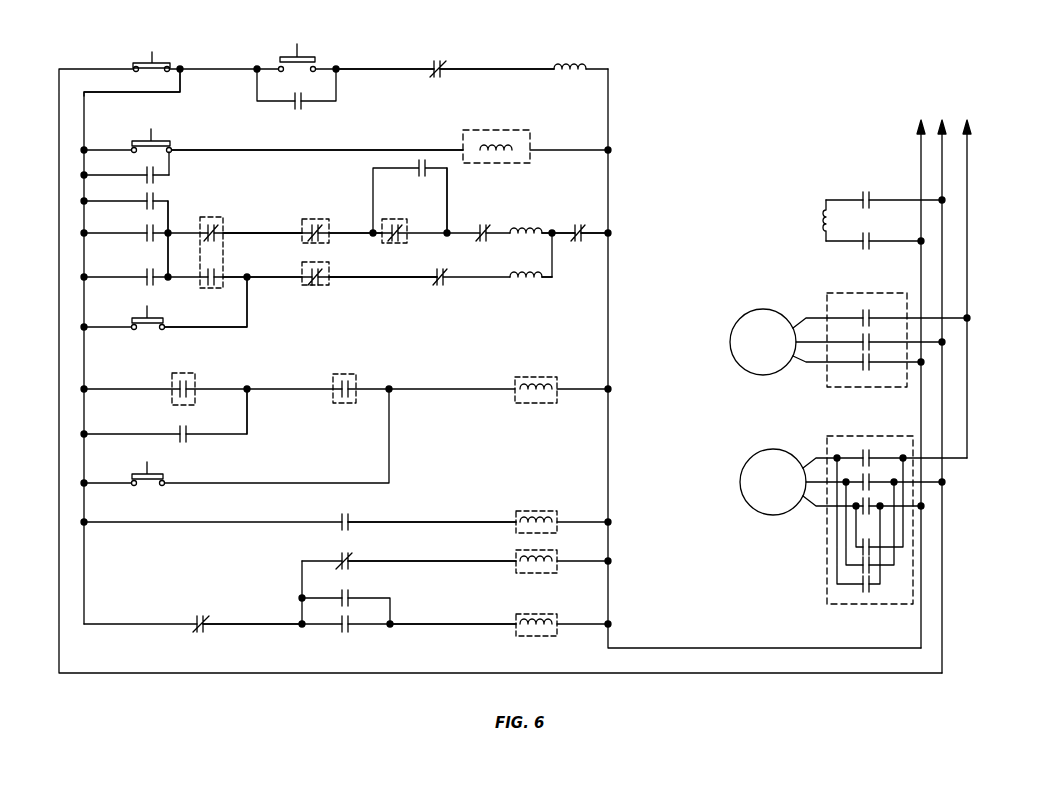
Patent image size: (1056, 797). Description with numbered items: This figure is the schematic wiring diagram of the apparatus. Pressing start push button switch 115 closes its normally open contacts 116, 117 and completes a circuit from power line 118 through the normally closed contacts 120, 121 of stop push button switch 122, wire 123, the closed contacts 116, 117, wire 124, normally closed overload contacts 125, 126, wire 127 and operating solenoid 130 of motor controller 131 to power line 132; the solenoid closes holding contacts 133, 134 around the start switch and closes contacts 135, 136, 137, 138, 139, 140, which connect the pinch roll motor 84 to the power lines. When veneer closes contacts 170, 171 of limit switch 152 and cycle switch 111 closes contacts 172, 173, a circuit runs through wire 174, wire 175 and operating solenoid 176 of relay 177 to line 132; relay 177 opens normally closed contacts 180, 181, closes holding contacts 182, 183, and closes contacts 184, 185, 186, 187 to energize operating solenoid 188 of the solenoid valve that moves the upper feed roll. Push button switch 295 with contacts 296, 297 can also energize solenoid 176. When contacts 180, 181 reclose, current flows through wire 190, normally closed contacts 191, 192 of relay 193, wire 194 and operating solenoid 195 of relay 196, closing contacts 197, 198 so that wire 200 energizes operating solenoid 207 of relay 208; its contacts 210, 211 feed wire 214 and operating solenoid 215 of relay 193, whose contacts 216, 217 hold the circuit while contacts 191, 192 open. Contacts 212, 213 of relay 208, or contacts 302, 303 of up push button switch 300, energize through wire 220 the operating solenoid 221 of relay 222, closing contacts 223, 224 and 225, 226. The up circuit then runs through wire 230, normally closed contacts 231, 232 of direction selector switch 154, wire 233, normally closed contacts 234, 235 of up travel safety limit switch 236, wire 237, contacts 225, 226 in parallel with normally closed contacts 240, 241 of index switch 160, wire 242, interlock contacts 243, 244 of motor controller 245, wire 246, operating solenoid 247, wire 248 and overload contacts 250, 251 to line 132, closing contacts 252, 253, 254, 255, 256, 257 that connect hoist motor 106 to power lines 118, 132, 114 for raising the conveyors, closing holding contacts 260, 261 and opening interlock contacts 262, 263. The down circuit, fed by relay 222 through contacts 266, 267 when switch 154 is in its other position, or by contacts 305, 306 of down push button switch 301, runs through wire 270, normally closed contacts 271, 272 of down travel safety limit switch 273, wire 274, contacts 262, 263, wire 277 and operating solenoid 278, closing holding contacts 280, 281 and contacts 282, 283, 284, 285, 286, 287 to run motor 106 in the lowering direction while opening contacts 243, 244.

The motor 84 is at (763, 309).
The hoist motor 106 is at (764, 454).
The timing switch 111 is at (185, 363).
The power line 114 is at (967, 156).
The start push button switch 115 is at (298, 45).
The normally open contact 116 is at (279, 66).
The normally open contact 117 is at (315, 66).
The power line 118 is at (59, 215).
The normally closed contact 120 is at (135, 66).
The normally closed contact 121 is at (169, 66).
The stop push button switch 122 is at (153, 52).
The wire 123 is at (200, 80).
The wire 124 is at (365, 80).
The normally closed overload contact 125 is at (433, 67).
The normally closed overload contact 126 is at (447, 62).
The wire 127 is at (509, 69).
The operating solenoid 130 is at (575, 67).
The motor controller 131 is at (827, 374).
The power line 132 is at (612, 171).
The normally open contact 133 is at (292, 106).
The normally open contact 134 is at (306, 107).
The normally open contact 135 is at (862, 316).
The normally open contact 136 is at (870, 314).
The normally open contact 137 is at (862, 340).
The normally open contact 138 is at (870, 340).
The normally open contact 139 is at (862, 368).
The normally open contact 140 is at (870, 368).
The limit switch 152 is at (342, 374).
The direction selector switch 154 is at (218, 225).
The index switch 160 is at (393, 219).
The normally open contact 170 is at (340, 384).
The normally open contact 171 is at (350, 386).
The normally open contact 172 is at (178, 386).
The normally open contact 173 is at (188, 387).
The wire 174 is at (247, 414).
The wire 175 is at (390, 415).
The operating solenoid 176 is at (534, 384).
The relay 177 is at (543, 377).
The normally closed contact 180 is at (195, 620).
The normally closed contact 181 is at (207, 618).
The normally open contact 182 is at (178, 428).
The normally open contact 183 is at (188, 432).
The normally open contact 184 is at (860, 198).
The normally open contact 185 is at (870, 196).
The normally open contact 186 is at (862, 248).
The normally open contact 187 is at (870, 250).
The operating solenoid 188 is at (822, 224).
The wire 190 is at (236, 628).
The normally closed contact 191 is at (340, 558).
The normally closed contact 192 is at (350, 558).
The relay 193 is at (545, 614).
The wire 194 is at (405, 562).
The operating solenoid 195 is at (526, 560).
The relay 196 is at (545, 556).
The normally open contact 197 is at (339, 521).
The normally open contact 198 is at (350, 520).
The wire 200 is at (405, 522).
The operating solenoid 207 is at (530, 520).
The relay 208 is at (540, 511).
The normally open contact 210 is at (338, 633).
The normally open contact 211 is at (352, 634).
The normally open contact 212 is at (144, 171).
The normally open contact 213 is at (156, 176).
The wire 214 is at (430, 630).
The operating solenoid 215 is at (530, 622).
The normally open contact 216 is at (342, 594).
The normally open contact 217 is at (350, 594).
The wire 220 is at (372, 150).
The operating solenoid 221 is at (496, 144).
The relay 222 is at (520, 130).
The normally open contact 223 is at (144, 198).
The normally open contact 224 is at (156, 200).
The normally open contact 225 is at (418, 170).
The normally open contact 226 is at (447, 180).
The wire 230 is at (169, 219).
The normally closed contact 231 is at (206, 240).
The normally closed contact 232 is at (219, 228).
The wire 233 is at (268, 233).
The normally closed contact 234 is at (302, 240).
The normally closed contact 235 is at (325, 222).
The up travel safety limit switch 236 is at (314, 219).
The wire 237 is at (322, 229).
The normally closed contact 240 is at (382, 240).
The normally closed contact 241 is at (420, 228).
The wire 242 is at (448, 198).
The interlock contact 243 is at (478, 243).
The interlock contact 244 is at (490, 230).
The motor controller 245 is at (822, 614).
The wire 246 is at (505, 237).
The operating solenoid 247 is at (532, 233).
The wire 248 is at (555, 270).
The overload contact 250 is at (574, 243).
The overload contact 251 is at (586, 228).
The normally open contact 252 is at (863, 456).
The normally open contact 253 is at (871, 458).
The normally open contact 254 is at (863, 480).
The normally open contact 255 is at (871, 480).
The normally open contact 256 is at (863, 504).
The normally open contact 257 is at (871, 504).
The normally open contact 260 is at (144, 231).
The normally open contact 261 is at (150, 240).
The interlock contact 262 is at (435, 285).
The interlock contact 263 is at (446, 270).
The contact 266 is at (207, 286).
The contact 267 is at (217, 274).
The wire 270 is at (247, 313).
The normally closed contact 271 is at (302, 284).
The normally closed contact 272 is at (324, 270).
The down travel safety limit switch 273 is at (316, 285).
The wire 274 is at (369, 280).
The wire 277 is at (476, 278).
The operating solenoid 278 is at (525, 284).
The normally open contact 280 is at (146, 284).
The normally open contact 281 is at (156, 284).
The normally open contact 282 is at (860, 548).
The normally open contact 283 is at (874, 546).
The normally open contact 284 is at (860, 566).
The normally open contact 285 is at (874, 564).
The normally open contact 286 is at (860, 586).
The normally open contact 287 is at (874, 586).
The push button switch 295 is at (143, 464).
The normally open contact 296 is at (132, 487).
The normally open contact 297 is at (162, 488).
The up push button switch 300 is at (152, 131).
The down push button switch 301 is at (146, 309).
The normally open contact 302 is at (133, 148).
The normally open contact 303 is at (170, 149).
The normally open contact 305 is at (133, 332).
The normally open contact 306 is at (163, 332).